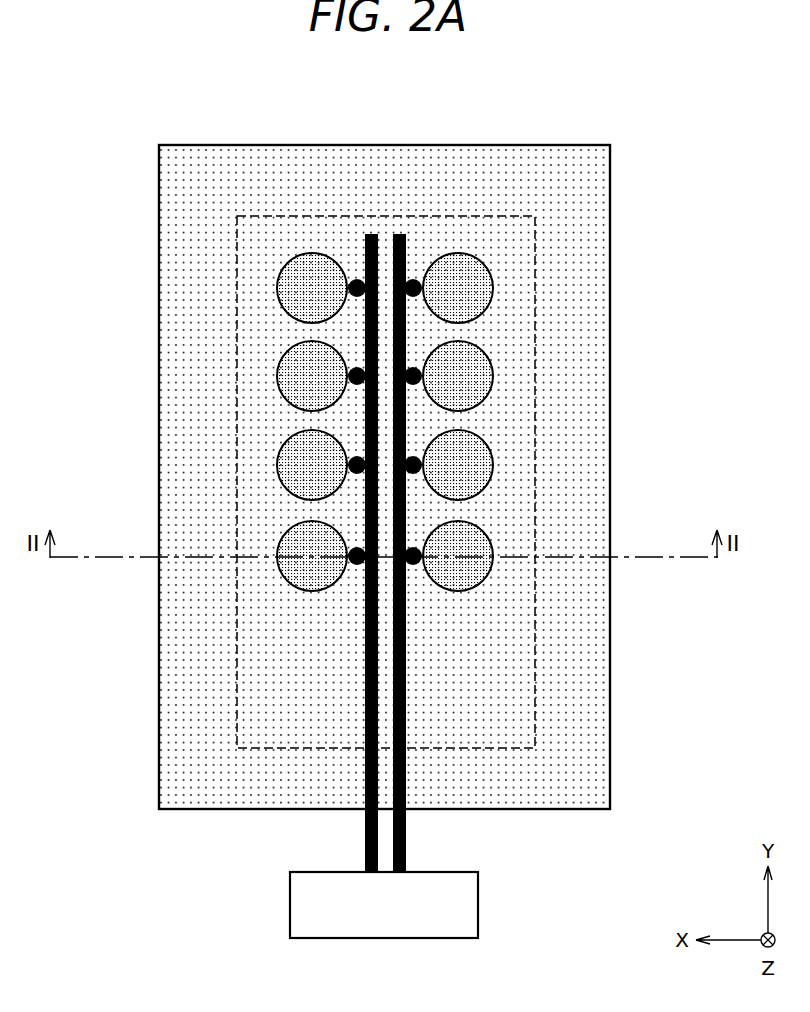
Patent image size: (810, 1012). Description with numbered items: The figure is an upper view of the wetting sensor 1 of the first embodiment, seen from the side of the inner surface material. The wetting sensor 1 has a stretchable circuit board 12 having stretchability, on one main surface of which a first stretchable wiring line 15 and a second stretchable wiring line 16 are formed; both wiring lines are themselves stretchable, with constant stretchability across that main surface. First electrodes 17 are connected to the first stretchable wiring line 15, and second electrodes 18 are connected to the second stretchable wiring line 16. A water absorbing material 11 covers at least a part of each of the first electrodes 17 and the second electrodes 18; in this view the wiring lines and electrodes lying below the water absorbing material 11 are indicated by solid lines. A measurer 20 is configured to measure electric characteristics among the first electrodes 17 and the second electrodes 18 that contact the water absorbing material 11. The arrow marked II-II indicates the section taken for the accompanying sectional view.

The wetting sensor 1 is at (377, 78).
The water absorbing material 11 is at (598, 227).
The stretchable circuit board 12 is at (522, 319).
The first stretchable wiring line 15 is at (371, 234).
The second stretchable wiring line 16 is at (399, 234).
The first electrodes 17 is at (313, 254).
The second electrodes 18 is at (455, 254).
The measurer 20 is at (478, 903).